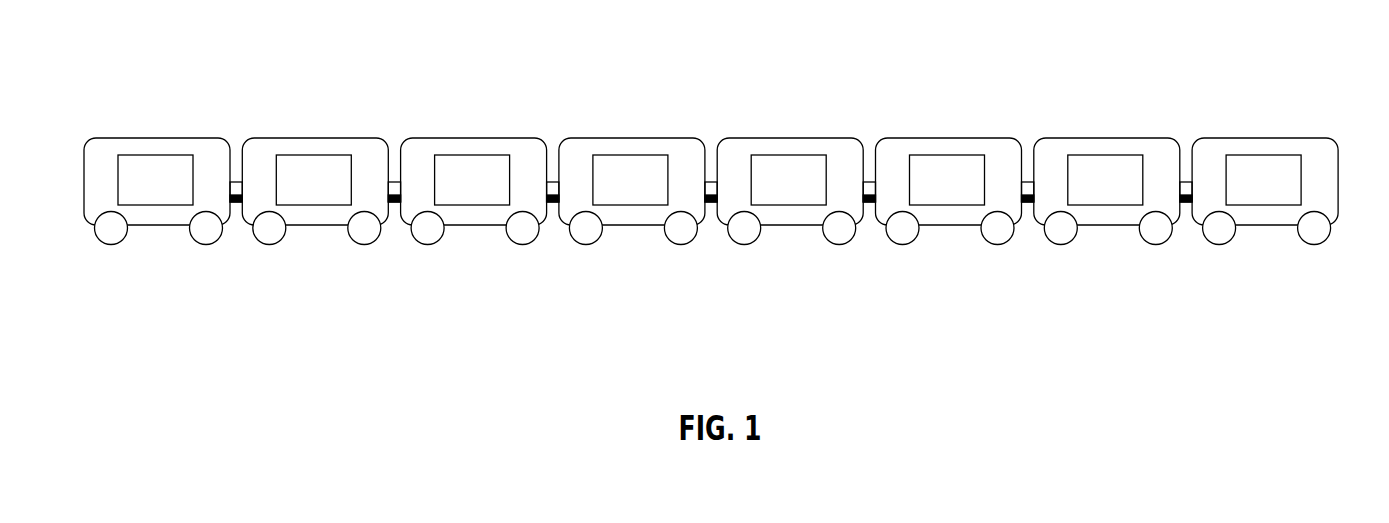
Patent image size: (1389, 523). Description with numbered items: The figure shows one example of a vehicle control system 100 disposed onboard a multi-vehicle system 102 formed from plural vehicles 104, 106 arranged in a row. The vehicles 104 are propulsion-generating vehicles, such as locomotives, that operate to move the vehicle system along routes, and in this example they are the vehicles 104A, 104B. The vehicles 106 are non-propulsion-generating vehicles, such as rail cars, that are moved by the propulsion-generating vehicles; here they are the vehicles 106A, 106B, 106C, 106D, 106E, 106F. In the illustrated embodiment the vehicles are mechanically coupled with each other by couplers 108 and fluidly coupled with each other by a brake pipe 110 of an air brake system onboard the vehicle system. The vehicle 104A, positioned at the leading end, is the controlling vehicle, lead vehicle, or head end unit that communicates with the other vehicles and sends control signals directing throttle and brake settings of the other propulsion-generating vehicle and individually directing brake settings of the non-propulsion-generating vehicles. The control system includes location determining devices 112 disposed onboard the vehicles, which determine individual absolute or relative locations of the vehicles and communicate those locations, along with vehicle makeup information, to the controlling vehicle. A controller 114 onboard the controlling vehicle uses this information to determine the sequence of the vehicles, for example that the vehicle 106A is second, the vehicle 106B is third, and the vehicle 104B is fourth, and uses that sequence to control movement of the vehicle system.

The vehicle control system 100 is at (121, 110).
The multi-vehicle system 102 is at (89, 311).
The propulsion-generating vehicle 104 is at (97, 131).
The controlling vehicle 104A is at (157, 225).
The propulsion-generating vehicle 104B is at (633, 225).
The non-propulsion-generating vehicle 106 is at (1307, 94).
The non-propulsion-generating vehicle 106A is at (325, 225).
The non-propulsion-generating vehicle 106B is at (492, 225).
The non-propulsion-generating vehicle 106C is at (788, 225).
The non-propulsion-generating vehicle 106D is at (946, 225).
The non-propulsion-generating vehicle 106E is at (1100, 225).
The non-propulsion-generating vehicle 106F is at (1263, 225).
The coupler 108 is at (235, 182).
The brake pipe 110 is at (395, 202).
The location determining device 112 is at (292, 192).
The controller 114 is at (134, 192).